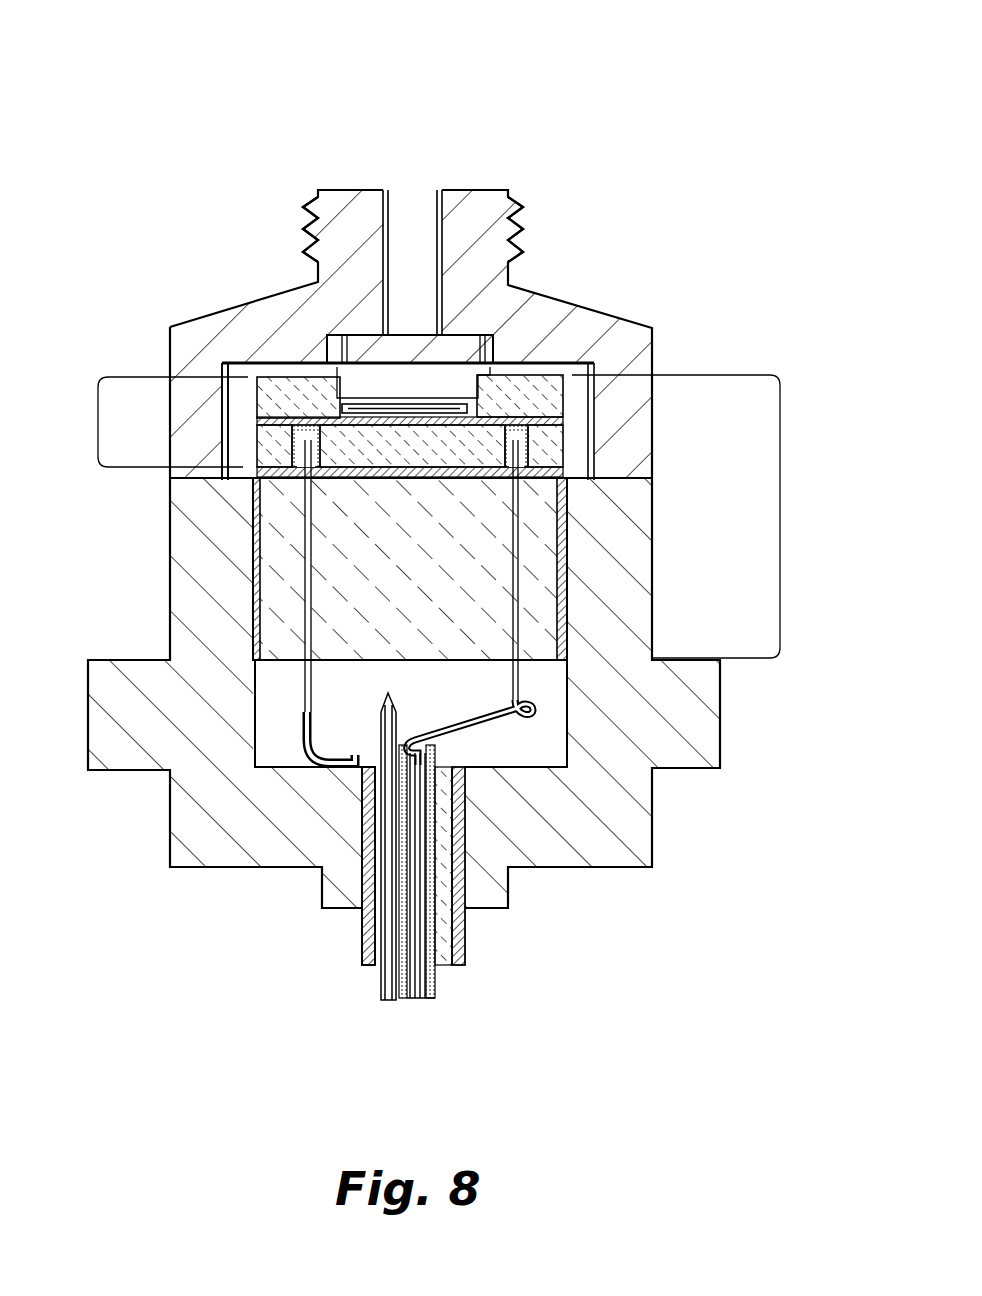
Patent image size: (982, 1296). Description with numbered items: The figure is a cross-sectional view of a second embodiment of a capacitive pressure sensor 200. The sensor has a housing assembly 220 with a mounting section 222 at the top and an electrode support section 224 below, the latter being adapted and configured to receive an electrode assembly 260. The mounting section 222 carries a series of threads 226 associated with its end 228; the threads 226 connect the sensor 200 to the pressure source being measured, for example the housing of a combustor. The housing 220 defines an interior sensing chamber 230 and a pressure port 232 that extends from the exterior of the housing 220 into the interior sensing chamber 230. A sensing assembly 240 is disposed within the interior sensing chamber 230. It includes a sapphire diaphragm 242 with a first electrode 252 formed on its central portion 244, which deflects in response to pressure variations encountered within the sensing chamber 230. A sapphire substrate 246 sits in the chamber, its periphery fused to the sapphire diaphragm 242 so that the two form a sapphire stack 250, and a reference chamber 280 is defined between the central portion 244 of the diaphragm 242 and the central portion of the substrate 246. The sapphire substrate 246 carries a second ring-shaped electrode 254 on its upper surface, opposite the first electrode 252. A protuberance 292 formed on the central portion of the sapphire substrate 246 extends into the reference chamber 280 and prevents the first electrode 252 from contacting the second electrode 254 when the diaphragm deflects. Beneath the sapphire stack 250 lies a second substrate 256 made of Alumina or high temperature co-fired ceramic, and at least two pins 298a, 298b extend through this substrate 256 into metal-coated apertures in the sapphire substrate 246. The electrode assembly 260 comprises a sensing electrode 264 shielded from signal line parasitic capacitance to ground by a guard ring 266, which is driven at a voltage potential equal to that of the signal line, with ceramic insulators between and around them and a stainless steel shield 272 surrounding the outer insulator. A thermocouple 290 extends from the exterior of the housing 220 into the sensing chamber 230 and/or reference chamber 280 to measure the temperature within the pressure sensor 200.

The capacitive pressure sensor 200 is at (152, 100).
The housing assembly 220 is at (660, 355).
The mounting section 222 is at (532, 210).
The electrode support section 224 is at (655, 812).
The threads 226 is at (316, 235).
The end 228 is at (462, 190).
The interior sensing chamber 230 is at (327, 363).
The pressure port 232 is at (405, 216).
The sensing assembly 240 is at (794, 498).
The sapphire diaphragm 242 is at (257, 395).
The central portion 244 is at (430, 398).
The sapphire substrate 246 is at (247, 440).
The sapphire stack 250 is at (80, 422).
The first electrode 252 is at (357, 400).
The second ring-shaped electrode 254 is at (453, 402).
The HTCC/Alumina substrate 256 is at (421, 556).
The electrode assembly 260 is at (479, 952).
The sensing electrode 264 is at (422, 1000).
The guard ring 266 is at (440, 985).
The stainless steel shield 272 is at (363, 955).
The reference chamber 280 is at (497, 380).
The thermocouple 290 is at (398, 703).
The protuberance 292 is at (405, 404).
The pin 298a is at (311, 680).
The pin 298b is at (512, 688).